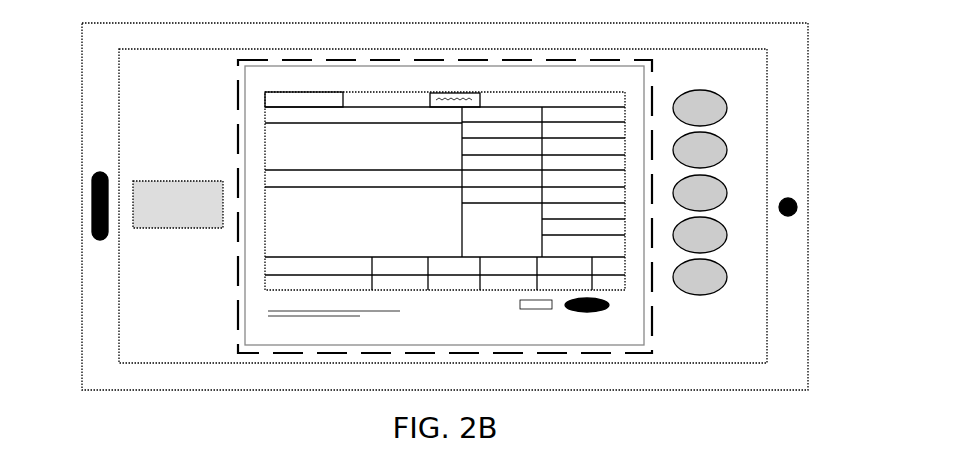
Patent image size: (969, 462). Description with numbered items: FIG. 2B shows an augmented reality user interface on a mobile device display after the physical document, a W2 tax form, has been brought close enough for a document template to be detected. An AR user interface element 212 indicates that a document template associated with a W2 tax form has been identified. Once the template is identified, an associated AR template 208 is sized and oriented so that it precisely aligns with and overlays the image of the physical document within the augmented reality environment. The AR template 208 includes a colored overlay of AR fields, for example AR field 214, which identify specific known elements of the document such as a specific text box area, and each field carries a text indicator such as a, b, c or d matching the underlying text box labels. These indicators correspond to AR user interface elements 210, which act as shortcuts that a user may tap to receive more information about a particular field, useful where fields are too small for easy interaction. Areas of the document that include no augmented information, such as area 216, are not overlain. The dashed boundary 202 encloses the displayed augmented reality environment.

The display screen area 202 is at (237, 100).
The AR template 208 is at (628, 88).
The AR user interface elements 210 is at (735, 293).
The AR user interface element 212 is at (210, 180).
The AR field 214 is at (270, 241).
The area 216 is at (468, 93).